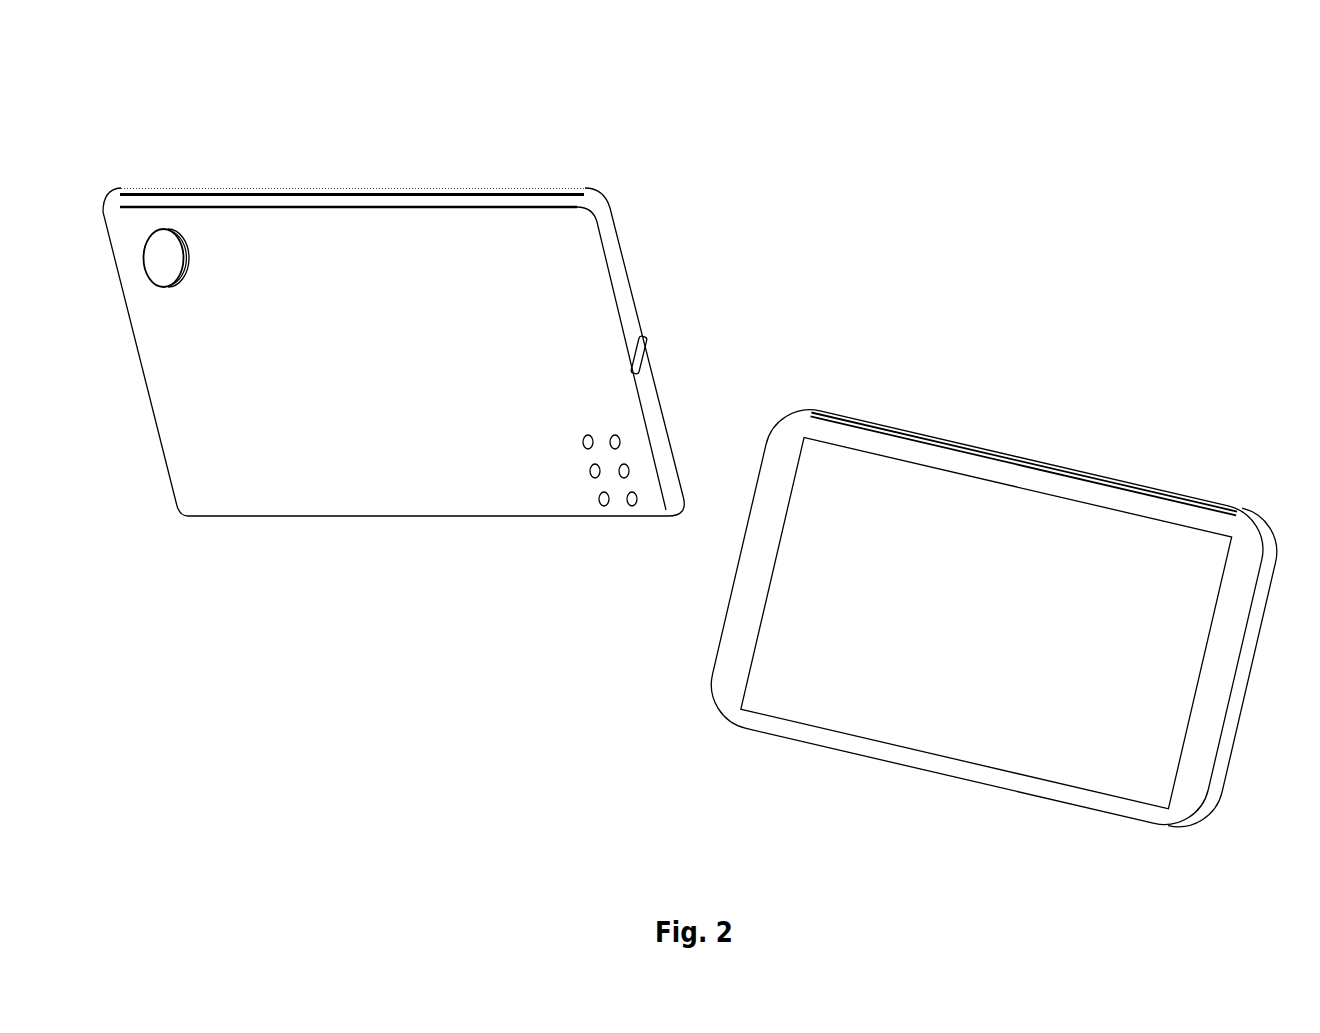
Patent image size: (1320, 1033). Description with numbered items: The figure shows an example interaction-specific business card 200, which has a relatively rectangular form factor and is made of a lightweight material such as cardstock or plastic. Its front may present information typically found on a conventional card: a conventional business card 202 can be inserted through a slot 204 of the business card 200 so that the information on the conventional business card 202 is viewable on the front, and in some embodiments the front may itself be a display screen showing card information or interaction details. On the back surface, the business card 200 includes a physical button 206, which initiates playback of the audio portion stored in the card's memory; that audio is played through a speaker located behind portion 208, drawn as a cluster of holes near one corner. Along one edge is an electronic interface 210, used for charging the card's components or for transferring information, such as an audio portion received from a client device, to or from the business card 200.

The business card 200 is at (693, 51).
The conventional business card 202 is at (1030, 524).
The slot 204 is at (403, 193).
The button 206 is at (158, 268).
The portion 208 is at (592, 475).
The electronic interface 210 is at (645, 348).